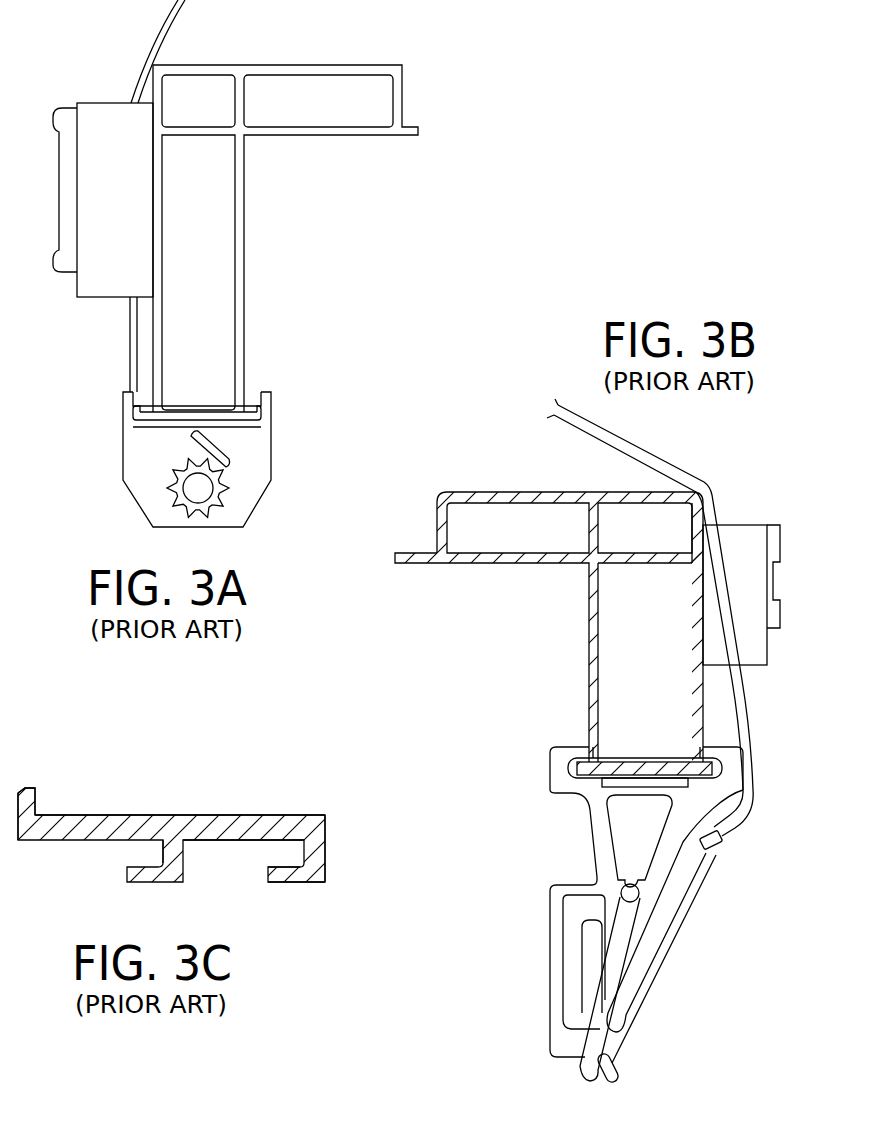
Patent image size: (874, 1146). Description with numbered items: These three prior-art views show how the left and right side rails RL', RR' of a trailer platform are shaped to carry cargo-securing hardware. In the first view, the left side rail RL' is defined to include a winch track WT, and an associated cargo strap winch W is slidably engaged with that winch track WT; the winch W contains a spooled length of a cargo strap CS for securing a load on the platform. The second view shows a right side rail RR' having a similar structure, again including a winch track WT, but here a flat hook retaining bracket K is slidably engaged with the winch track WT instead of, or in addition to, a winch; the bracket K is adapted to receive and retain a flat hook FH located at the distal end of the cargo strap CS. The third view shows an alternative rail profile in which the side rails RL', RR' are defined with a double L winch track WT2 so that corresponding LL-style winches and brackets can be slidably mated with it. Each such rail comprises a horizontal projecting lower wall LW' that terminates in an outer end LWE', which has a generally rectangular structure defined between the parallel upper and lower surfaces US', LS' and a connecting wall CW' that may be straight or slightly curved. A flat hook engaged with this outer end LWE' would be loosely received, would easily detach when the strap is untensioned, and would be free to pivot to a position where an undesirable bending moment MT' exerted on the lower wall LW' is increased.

In FIG. 3A, the cargo strap CS is at (176, 14).
In FIG. 3B, the cargo strap CS is at (652, 460).
In FIG. 3A, the winch track WT is at (192, 415).
In FIG. 3B, the winch track WT is at (644, 760).
In FIG. 3A, the left side rail RL' is at (285, 238).
In FIG. 3C, the left side rail RL' is at (74, 774).
In FIG. 3A, the cargo strap winch W is at (275, 469).
In FIG. 3B, the right side rail RR' is at (549, 627).
In FIG. 3B, the flat hook retaining bracket K is at (607, 885).
In FIG. 3B, the flat hook FH is at (656, 966).
In FIG. 3C, the horizontal projecting lower wall LW' is at (171, 802).
In FIG. 3C, the double L winch track WT2 is at (201, 809).
In FIG. 3C, the upper surface US' is at (201, 783).
In FIG. 3C, the outer end of the lower wall LWE' is at (376, 840).
In FIG. 3C, the connecting wall CW' is at (346, 880).
In FIG. 3C, the bending moment MT' is at (243, 886).
In FIG. 3C, the lower surface LS' is at (318, 913).